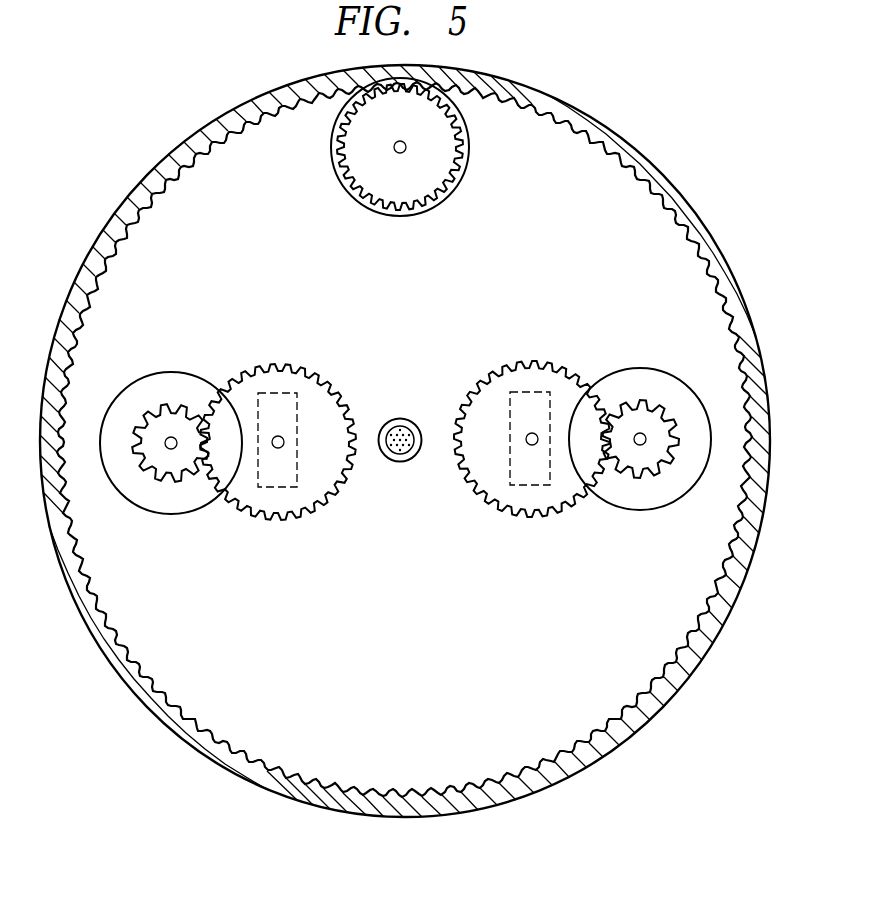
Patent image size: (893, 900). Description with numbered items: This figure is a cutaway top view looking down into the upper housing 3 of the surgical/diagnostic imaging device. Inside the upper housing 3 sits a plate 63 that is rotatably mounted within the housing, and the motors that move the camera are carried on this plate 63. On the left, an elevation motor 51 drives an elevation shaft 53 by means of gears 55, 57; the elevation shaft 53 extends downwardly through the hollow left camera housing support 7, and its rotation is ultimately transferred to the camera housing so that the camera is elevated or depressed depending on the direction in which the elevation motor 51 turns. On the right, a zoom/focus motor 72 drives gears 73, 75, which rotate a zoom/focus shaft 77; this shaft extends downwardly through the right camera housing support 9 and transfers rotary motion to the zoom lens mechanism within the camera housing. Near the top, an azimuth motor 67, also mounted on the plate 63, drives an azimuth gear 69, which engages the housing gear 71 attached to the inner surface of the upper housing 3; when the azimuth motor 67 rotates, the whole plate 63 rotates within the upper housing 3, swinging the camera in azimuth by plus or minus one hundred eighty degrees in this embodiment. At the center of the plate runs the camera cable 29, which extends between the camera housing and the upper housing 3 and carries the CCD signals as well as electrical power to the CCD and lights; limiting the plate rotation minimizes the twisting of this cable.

The upper housing 3 is at (752, 265).
The left camera housing support 7 is at (258, 445).
The right camera housing support 9 is at (510, 446).
The camera cable 29 is at (406, 419).
The elevation motor 51 is at (167, 506).
The elevation shaft 53 is at (284, 437).
The gear 55 is at (170, 422).
The gear 57 is at (280, 373).
The plate 63 is at (386, 682).
The azimuth motor 67 is at (468, 166).
The azimuth gear 69 is at (443, 196).
The housing gear 71 is at (643, 182).
The zoom/focus motor 72 is at (640, 367).
The gear 73 is at (560, 496).
The gear 75 is at (648, 458).
The zoom/focus shaft 77 is at (528, 432).